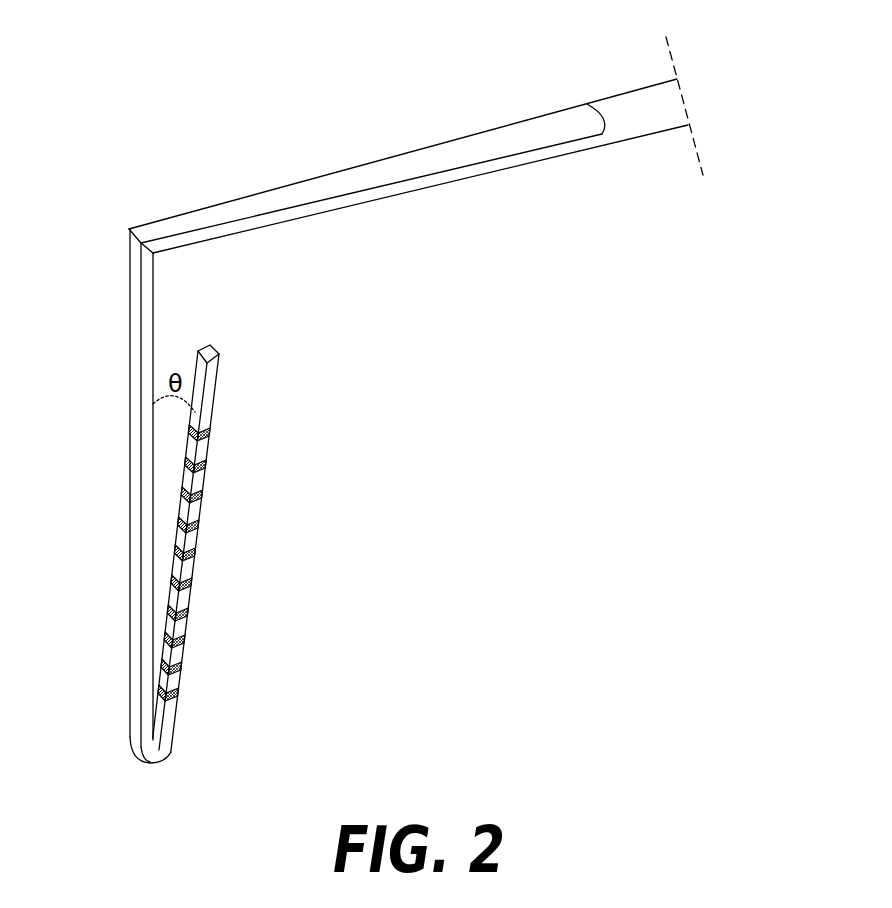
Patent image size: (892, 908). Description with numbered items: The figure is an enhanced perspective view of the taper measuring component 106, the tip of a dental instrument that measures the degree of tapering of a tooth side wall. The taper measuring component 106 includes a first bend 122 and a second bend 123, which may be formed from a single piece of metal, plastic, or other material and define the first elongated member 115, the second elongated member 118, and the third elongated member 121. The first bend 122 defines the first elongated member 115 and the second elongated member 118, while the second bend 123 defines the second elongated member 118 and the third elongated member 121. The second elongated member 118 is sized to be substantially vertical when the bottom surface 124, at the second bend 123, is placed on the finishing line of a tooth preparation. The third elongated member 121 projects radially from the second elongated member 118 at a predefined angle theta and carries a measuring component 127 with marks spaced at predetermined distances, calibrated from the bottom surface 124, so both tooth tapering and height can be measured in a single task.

The taper measuring component 106 is at (566, 553).
The first elongated member 115 is at (359, 165).
The second elongated member 118 is at (129, 382).
The third elongated member 121 is at (212, 401).
The first bend 122 is at (118, 229).
The second bend 123 is at (203, 783).
The bottom surface 124 is at (163, 782).
The measuring component 127 is at (220, 469).